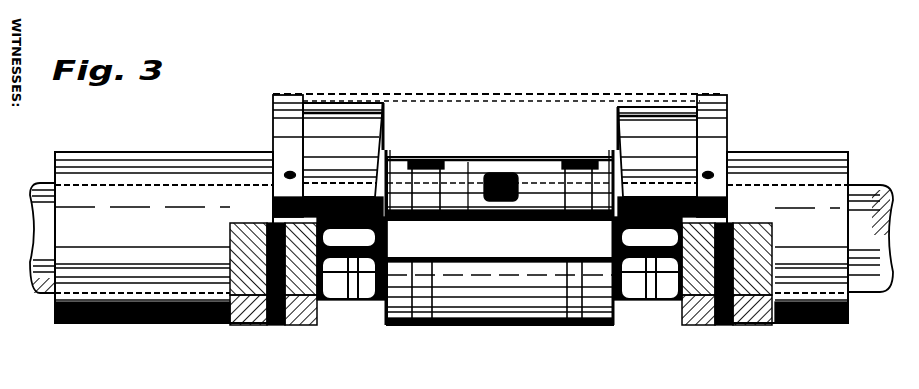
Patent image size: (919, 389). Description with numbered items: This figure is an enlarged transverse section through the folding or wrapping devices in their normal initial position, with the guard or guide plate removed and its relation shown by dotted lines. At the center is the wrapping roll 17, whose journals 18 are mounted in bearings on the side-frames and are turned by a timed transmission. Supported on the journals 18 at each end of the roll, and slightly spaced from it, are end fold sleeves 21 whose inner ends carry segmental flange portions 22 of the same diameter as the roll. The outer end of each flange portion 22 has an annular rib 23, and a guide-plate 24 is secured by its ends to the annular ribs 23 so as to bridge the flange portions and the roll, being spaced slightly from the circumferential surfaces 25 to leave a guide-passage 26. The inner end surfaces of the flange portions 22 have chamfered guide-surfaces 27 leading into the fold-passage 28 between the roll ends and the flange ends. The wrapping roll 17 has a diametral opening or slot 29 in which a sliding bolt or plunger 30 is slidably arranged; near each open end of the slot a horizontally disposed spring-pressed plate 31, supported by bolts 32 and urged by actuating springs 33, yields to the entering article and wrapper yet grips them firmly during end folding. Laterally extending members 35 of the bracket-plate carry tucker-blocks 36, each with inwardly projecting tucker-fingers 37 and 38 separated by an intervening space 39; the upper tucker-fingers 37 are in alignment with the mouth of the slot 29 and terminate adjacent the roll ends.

The wrapping roll 17 is at (497, 160).
The journals 18 is at (47, 218).
The end fold sleeves 21 is at (137, 162).
The segmental flange portions 22 is at (270, 208).
The annular rib 23 is at (278, 122).
The guide-plate 24 is at (448, 93).
The circumferential surfaces 25 is at (352, 84).
The guide-passage 26 is at (360, 102).
The chamfered guide-surfaces 27 is at (368, 173).
The fold-passage 28 is at (389, 153).
The opening or slot 29 is at (500, 253).
The sliding bolt or plunger 30 is at (537, 247).
The spring-pressed plate 31 is at (468, 213).
The bolts 32 is at (440, 187).
The actuating springs 33 is at (523, 175).
The laterally extending members 35 is at (248, 326).
The tucker-block 36 is at (207, 324).
The upper tucker-finger 37 is at (332, 300).
The tucker-finger 38 is at (358, 300).
The intervening space 39 is at (352, 300).